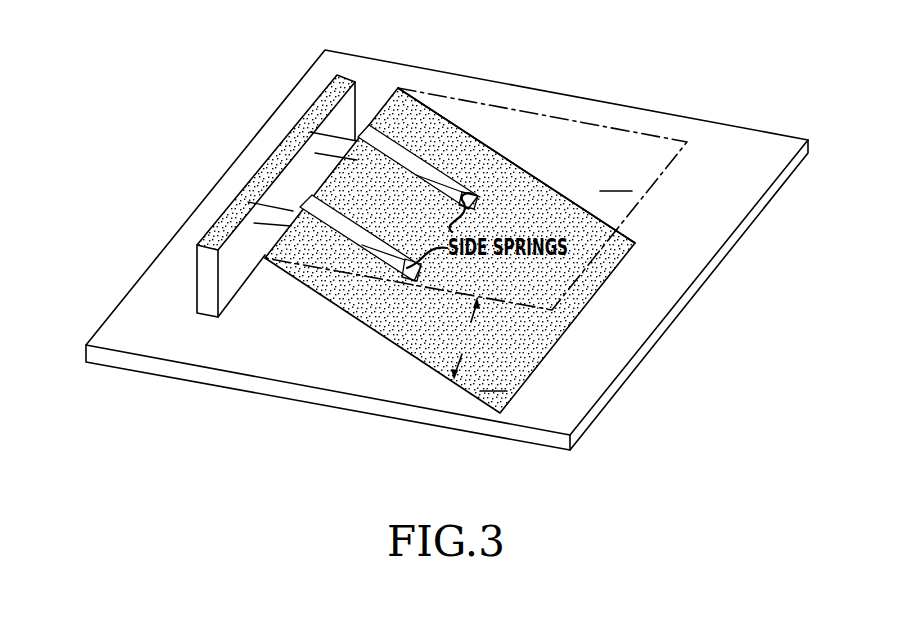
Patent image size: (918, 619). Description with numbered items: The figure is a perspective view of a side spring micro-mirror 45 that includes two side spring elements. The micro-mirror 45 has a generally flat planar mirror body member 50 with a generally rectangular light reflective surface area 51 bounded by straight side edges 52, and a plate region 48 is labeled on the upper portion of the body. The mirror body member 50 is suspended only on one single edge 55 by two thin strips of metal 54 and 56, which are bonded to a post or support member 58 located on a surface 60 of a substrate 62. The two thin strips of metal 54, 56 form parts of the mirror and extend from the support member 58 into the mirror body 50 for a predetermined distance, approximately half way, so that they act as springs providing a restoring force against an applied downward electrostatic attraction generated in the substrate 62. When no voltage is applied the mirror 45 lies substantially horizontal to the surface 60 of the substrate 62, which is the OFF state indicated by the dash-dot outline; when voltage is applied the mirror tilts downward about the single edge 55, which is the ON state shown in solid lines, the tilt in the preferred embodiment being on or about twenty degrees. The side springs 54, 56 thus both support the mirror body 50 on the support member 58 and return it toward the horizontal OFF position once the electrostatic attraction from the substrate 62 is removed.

The side spring micro-mirror 45 is at (672, 200).
The plate surface 48 is at (527, 196).
The mirror body member 50 is at (590, 300).
The light reflective surface area 51 is at (615, 245).
The straight side edges 52 is at (487, 143).
The thin strip of metal 54 is at (266, 212).
The single edge 55 is at (382, 103).
The thin strip of metal 56 is at (325, 138).
The post or support member 58 is at (232, 280).
The surface of substrate 60 is at (353, 378).
The substrate 62 is at (163, 367).